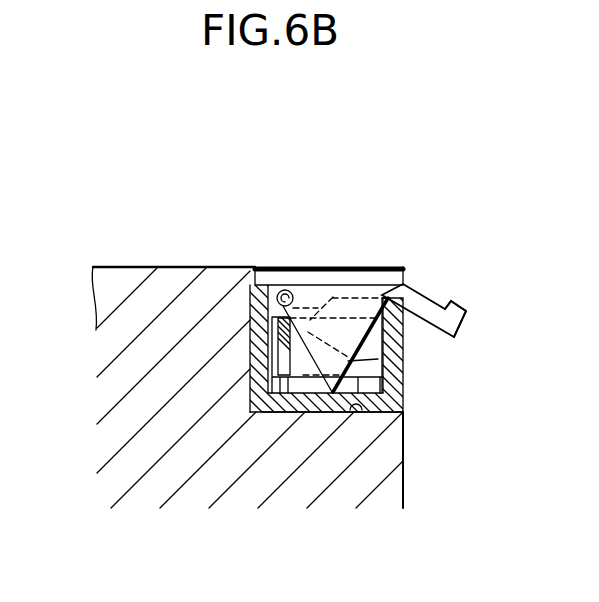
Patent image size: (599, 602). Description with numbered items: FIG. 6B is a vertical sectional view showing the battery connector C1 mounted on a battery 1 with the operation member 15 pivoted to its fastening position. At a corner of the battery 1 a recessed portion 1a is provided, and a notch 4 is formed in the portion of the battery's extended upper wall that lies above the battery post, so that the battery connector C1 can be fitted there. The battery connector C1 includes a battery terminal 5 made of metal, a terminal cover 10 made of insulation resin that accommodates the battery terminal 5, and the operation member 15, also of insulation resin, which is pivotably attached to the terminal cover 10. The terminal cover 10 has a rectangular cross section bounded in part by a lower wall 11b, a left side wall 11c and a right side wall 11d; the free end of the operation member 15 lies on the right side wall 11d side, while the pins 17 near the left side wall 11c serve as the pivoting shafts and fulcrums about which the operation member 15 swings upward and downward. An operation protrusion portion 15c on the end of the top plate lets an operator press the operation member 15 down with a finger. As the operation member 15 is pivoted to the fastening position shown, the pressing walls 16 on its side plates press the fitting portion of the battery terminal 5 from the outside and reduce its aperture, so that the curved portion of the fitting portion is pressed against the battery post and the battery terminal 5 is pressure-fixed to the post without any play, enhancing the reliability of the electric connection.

The battery 1 is at (146, 270).
The recessed portion 1a is at (403, 480).
The notch 4 is at (255, 275).
The battery terminal 5 is at (357, 402).
The terminal cover 10 is at (404, 353).
The lower wall 11b is at (282, 412).
The left side wall 11c is at (258, 343).
The right side wall 11d is at (403, 399).
The operation member 15 is at (418, 283).
The operation protrusion portion 15c is at (457, 308).
The pressing wall 16 is at (386, 372).
The pin 17 is at (288, 291).
The battery connector C1 is at (283, 333).